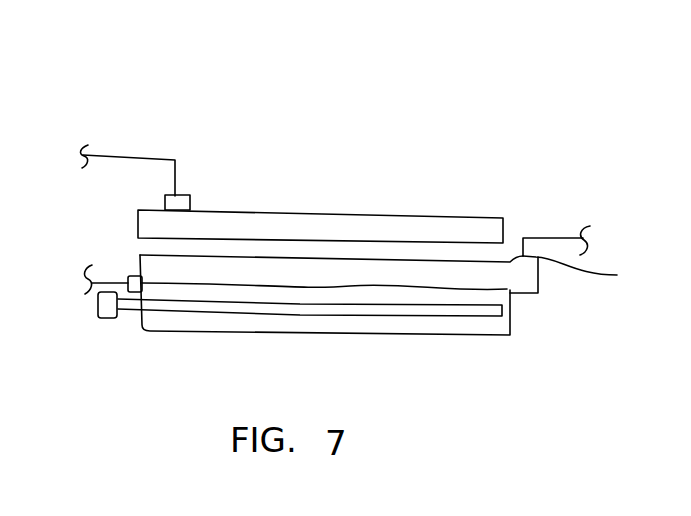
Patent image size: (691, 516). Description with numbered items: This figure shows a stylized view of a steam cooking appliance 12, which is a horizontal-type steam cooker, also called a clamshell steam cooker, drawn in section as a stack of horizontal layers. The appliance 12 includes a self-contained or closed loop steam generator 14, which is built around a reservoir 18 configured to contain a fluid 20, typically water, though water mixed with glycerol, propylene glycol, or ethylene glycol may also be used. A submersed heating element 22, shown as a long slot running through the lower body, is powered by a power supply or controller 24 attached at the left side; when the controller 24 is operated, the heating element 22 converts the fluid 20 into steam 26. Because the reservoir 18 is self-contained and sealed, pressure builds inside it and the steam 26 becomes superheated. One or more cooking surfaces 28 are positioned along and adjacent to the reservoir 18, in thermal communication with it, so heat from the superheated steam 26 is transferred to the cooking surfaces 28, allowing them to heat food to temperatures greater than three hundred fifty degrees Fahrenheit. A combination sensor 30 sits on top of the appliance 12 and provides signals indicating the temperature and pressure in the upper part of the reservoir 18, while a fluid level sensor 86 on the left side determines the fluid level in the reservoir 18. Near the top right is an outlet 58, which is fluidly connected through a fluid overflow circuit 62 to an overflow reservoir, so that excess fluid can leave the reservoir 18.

The steam cooking appliance 12 is at (92, 73).
The self-contained or closed loop steam generator 14 is at (292, 337).
The reservoir 18 is at (487, 325).
The fluid 20 is at (430, 325).
The submersed heating element 22 is at (200, 313).
The power supply or controller 24 is at (108, 318).
The steam 26 is at (440, 277).
The cooking surface 28 is at (300, 258).
The combination sensor 30 is at (190, 198).
The outlet 58 is at (583, 274).
The fluid overflow circuit 62 is at (555, 238).
The fluid level sensor 86 is at (130, 277).